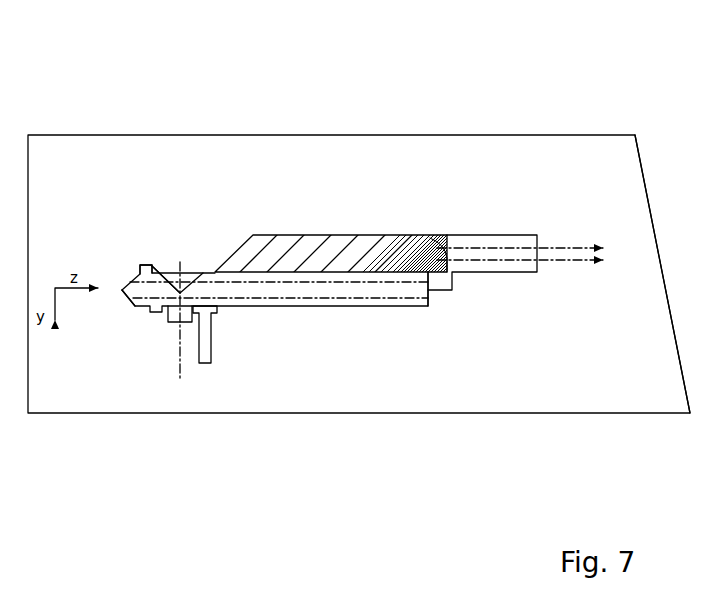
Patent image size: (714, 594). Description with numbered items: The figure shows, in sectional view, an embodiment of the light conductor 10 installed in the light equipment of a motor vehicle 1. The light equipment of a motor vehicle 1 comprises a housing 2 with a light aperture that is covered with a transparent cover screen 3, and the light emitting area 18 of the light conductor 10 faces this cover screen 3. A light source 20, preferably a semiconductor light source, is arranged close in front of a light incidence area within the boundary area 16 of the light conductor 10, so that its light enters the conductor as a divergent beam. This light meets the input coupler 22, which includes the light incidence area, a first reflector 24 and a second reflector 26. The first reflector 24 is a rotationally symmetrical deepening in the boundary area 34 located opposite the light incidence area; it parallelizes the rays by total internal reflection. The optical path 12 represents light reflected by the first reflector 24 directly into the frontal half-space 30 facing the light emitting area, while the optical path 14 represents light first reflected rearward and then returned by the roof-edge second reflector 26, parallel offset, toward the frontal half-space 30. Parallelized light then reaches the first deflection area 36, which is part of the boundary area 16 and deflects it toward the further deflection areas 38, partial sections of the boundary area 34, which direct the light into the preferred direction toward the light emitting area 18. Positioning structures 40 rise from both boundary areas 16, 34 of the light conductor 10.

The light equipment of a motor vehicle 1 is at (520, 90).
The housing 2 is at (542, 413).
The cover screen 3 is at (647, 184).
The light conductor 10 is at (502, 214).
The optical path 12 is at (588, 243).
The optical path 14 is at (573, 267).
The boundary area 16 is at (336, 308).
The light emitting area 18 is at (537, 242).
The light source 20 is at (163, 332).
The input coupler 22 is at (164, 224).
The first reflector 24 is at (170, 267).
The second reflector 26 is at (118, 308).
The frontal section or half-space 30 is at (455, 233).
The boundary area 34 is at (167, 270).
The first deflection area 36 is at (437, 284).
The further deflection areas 38 is at (342, 240).
The positioning structures 40 is at (137, 267).